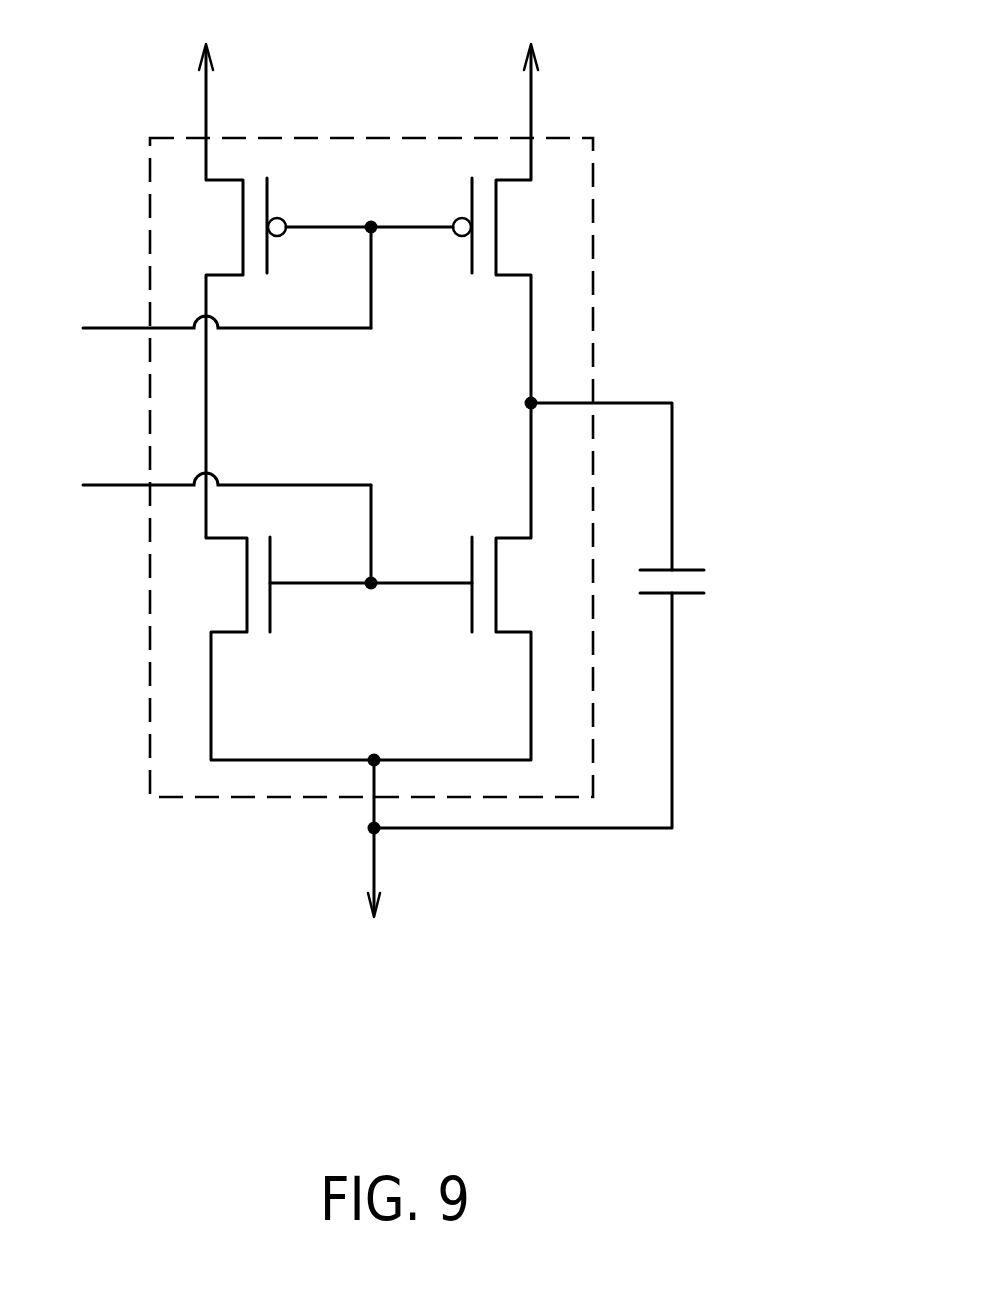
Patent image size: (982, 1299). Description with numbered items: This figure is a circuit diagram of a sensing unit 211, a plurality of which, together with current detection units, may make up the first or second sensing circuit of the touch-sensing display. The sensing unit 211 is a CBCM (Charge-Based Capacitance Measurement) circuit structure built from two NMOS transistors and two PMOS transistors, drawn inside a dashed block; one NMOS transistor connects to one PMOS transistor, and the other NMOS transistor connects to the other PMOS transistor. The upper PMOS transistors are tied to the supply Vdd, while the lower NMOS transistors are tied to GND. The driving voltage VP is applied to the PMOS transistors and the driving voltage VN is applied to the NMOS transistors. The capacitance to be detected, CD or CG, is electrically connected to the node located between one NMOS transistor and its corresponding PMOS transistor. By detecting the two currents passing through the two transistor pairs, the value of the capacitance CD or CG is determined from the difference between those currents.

The sensing unit 211 is at (369, 137).
The supply voltage Vdd is at (369, 69).
The driving voltage of the PMOS transistors VP is at (206, 334).
The driving voltage of the NMOS transistors VN is at (206, 491).
The capacitance to be detected CD is at (614, 613).
The capacitance to be detected CG is at (614, 613).
The ground GND is at (377, 863).